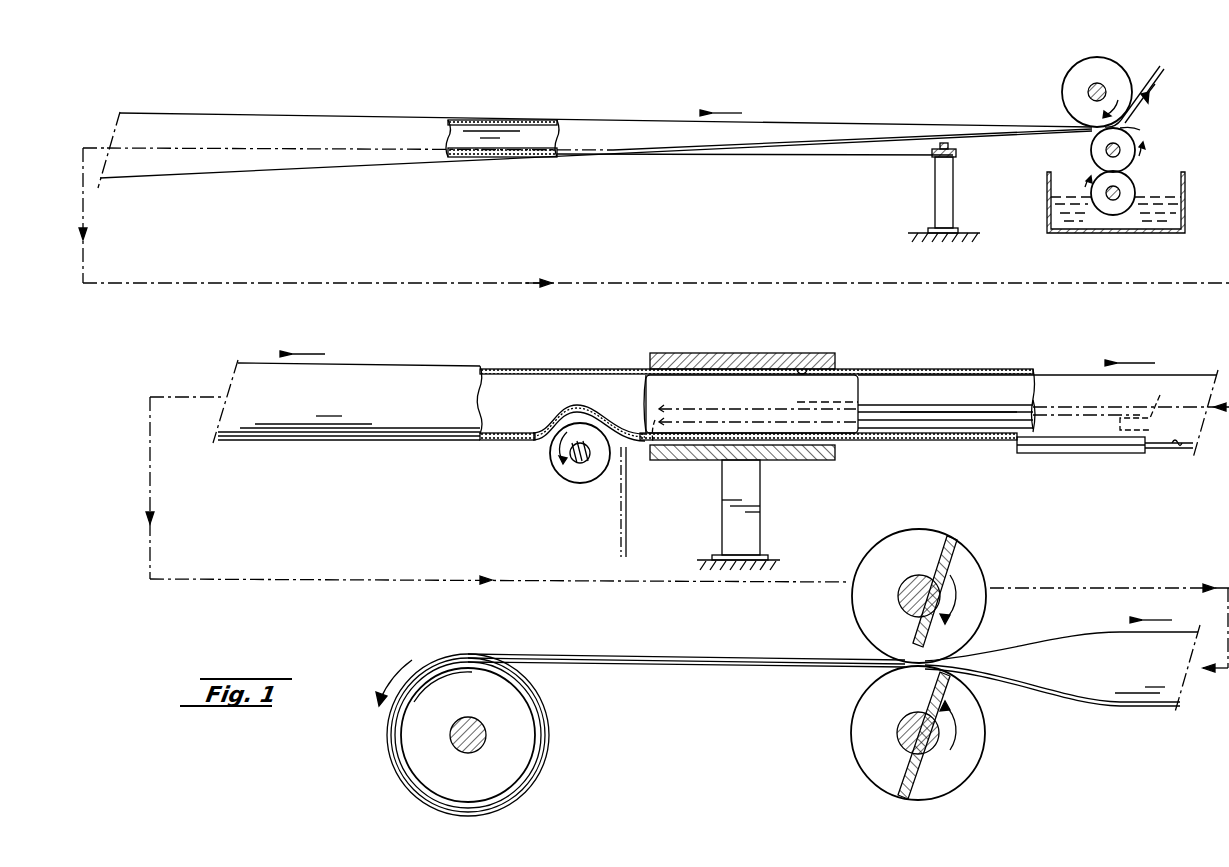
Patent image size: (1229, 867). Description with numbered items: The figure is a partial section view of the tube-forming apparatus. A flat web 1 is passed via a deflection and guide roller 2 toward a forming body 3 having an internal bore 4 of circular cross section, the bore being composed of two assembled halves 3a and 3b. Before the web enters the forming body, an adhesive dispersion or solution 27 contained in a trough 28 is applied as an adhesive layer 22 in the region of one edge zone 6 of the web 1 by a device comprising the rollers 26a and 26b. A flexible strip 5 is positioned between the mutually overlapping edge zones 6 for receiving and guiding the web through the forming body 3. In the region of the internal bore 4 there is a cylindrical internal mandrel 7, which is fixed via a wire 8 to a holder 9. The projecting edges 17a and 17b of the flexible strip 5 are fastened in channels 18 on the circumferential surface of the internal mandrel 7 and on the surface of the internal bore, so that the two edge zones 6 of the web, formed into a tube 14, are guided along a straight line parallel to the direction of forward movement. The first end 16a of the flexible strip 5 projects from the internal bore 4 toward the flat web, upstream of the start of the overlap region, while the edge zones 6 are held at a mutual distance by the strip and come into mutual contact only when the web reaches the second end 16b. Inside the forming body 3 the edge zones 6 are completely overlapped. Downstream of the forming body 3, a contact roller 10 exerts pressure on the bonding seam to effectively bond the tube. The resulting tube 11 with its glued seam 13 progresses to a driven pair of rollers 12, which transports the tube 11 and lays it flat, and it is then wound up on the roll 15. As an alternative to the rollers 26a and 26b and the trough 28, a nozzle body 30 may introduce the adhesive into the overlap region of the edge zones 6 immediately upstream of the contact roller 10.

The flat web 1 is at (1144, 98).
The deflection and guide roller 2 is at (1062, 92).
The forming body 3 is at (777, 349).
The half of the bore 3a is at (737, 362).
The half of the bore 3b is at (795, 460).
The internal bore 4 is at (806, 370).
The flexible strip 5 is at (948, 440).
The edge zone 6 is at (125, 178).
The internal mandrel 7 is at (678, 385).
The wire 8 is at (480, 148).
The holder 9 is at (946, 200).
The contact roller 10 is at (565, 470).
The tube 11 is at (420, 380).
The driven pair of rollers 12 is at (975, 578).
The glued seam 13 is at (500, 441).
The tube 14 is at (870, 380).
The take-up spool 15 is at (527, 745).
The first end of the flexible strip 16a is at (1160, 395).
The second end of the flexible strip 16b is at (653, 442).
The projecting edge of the flexible strip 17a is at (903, 412).
The projecting edge of the flexible strip 17b is at (1078, 430).
The channel 18 is at (648, 414).
The adhesive layer 22 is at (1132, 130).
The roller 26a is at (1106, 150).
The roller 26b is at (1120, 190).
The adhesive dispersion or solution 27 is at (1073, 215).
The trough 28 is at (1128, 234).
The nozzle body 30 is at (618, 528).